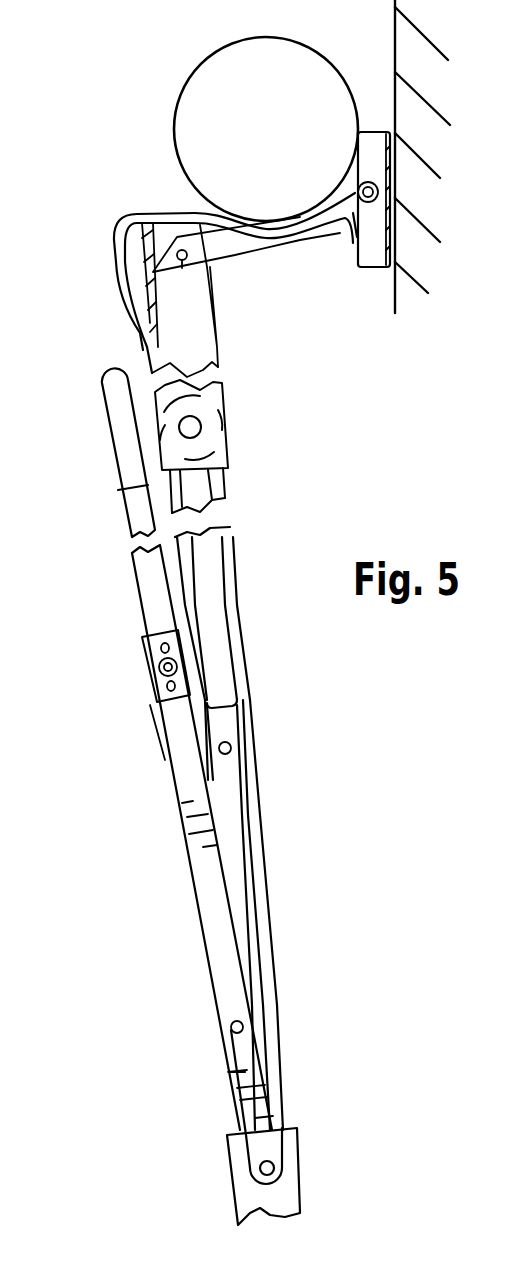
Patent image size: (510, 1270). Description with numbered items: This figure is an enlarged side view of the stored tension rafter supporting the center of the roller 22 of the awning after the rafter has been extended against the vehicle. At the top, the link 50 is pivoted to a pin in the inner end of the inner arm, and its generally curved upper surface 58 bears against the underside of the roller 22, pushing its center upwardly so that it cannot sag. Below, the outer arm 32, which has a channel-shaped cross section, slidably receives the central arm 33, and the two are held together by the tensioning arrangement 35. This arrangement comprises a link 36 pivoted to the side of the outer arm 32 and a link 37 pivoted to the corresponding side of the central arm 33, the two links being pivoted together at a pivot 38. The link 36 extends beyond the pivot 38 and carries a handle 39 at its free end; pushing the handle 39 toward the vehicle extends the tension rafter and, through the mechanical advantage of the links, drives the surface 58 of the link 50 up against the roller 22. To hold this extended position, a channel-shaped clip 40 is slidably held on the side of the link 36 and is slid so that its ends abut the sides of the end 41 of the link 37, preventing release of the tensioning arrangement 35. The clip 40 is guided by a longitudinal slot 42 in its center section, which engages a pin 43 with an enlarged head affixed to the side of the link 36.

The roller 22 is at (192, 133).
The outer arm 32 is at (295, 1195).
The central arm 33 is at (257, 995).
The tensioning arrangement 35 is at (118, 884).
The link 36 is at (218, 903).
The link 37 is at (233, 828).
The pivot 38 is at (230, 1027).
The handle 39 is at (117, 425).
The clip 40 is at (155, 657).
The end 41 is at (230, 742).
The longitudinal slot 42 is at (157, 637).
The pin 43 is at (185, 700).
The link 50 is at (233, 242).
The curved upper surface 58 is at (364, 242).